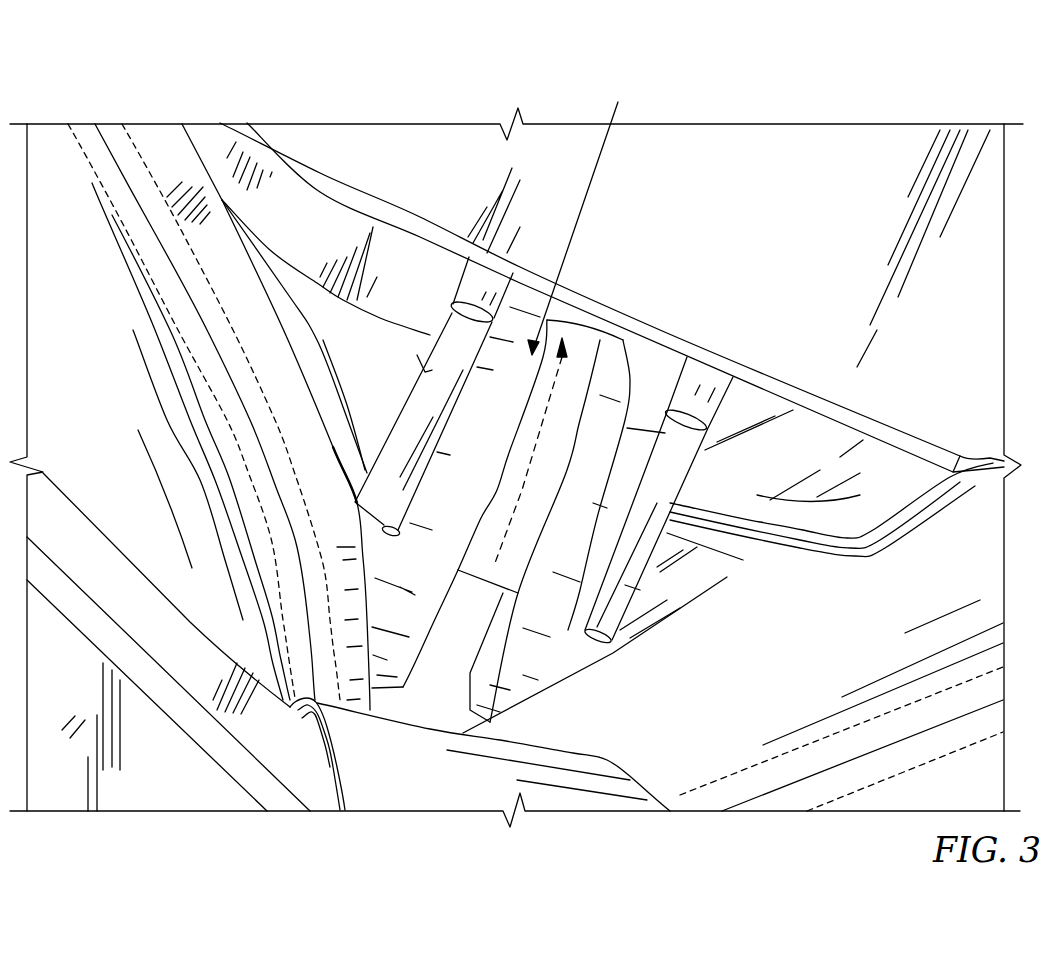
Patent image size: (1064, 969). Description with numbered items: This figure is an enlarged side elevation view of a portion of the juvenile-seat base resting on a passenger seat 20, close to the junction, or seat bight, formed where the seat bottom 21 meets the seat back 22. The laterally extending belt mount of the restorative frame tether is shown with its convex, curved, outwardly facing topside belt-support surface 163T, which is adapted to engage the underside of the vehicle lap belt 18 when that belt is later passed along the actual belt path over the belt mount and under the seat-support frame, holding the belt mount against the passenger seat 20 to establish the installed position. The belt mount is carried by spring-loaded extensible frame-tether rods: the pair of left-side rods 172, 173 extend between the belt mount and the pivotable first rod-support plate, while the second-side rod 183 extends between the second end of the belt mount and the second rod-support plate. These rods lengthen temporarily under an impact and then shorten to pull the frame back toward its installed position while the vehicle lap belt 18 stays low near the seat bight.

The seat back 22 is at (163, 130).
The convex outwardly facing topside belt-support surface 163T is at (876, 274).
The spring-loaded extensible frame-tether rod 173 is at (423, 388).
The spring-loaded extensible frame-tether rod 172 is at (637, 492).
The passenger seat 20 is at (972, 510).
The seat bottom 21 is at (943, 588).
The spring-loaded extensible frame-tether rod 183 is at (776, 720).
The vehicle lap belt 18 is at (414, 771).